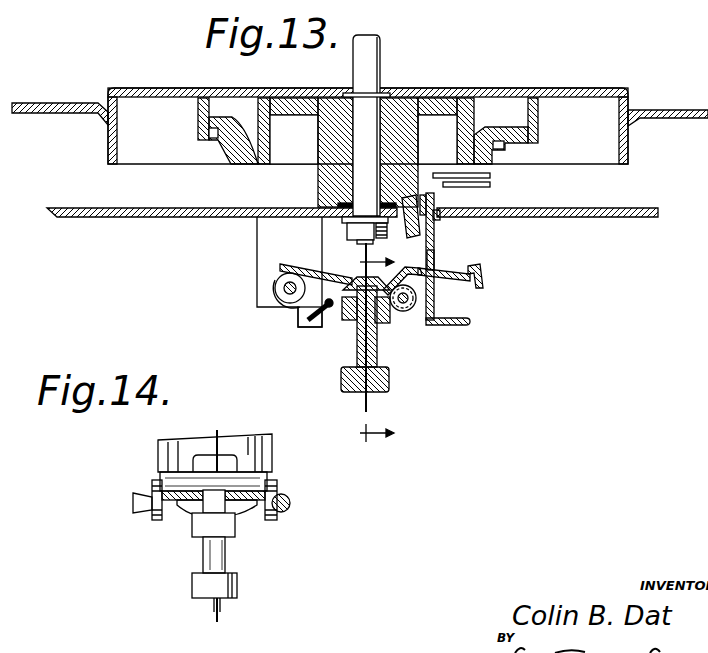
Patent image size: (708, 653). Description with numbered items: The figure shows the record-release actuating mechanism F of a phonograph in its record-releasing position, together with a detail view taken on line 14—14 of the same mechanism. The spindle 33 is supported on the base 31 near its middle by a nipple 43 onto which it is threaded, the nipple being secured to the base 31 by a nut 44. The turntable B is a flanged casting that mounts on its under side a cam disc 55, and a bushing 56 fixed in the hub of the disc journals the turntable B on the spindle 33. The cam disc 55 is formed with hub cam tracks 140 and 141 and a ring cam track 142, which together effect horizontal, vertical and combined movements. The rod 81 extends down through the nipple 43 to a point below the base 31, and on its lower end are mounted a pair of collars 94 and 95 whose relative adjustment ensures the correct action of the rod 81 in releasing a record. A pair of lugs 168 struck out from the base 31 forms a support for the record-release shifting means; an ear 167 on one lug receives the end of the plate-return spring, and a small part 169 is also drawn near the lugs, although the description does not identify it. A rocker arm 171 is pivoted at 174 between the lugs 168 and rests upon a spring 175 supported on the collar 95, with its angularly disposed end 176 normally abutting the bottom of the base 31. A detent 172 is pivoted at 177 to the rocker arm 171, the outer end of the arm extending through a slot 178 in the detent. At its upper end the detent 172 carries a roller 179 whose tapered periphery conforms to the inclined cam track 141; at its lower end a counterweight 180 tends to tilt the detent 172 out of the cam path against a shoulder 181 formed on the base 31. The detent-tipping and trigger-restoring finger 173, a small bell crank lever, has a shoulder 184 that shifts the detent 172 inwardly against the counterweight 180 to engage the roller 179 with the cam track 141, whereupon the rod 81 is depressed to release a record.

In FIG. 13, the turntable B is at (470, 92).
In FIG. 13, the spindle 33 is at (381, 48).
In FIG. 13, the bushing 56 is at (388, 100).
In FIG. 13, the cam disc 55 is at (538, 128).
In FIG. 13, the hub cam track 140 is at (316, 146).
In FIG. 13, the hub cam track 141 is at (291, 166).
In FIG. 13, the ring cam track 142 is at (213, 140).
In FIG. 13, the nipple 43 is at (338, 204).
In FIG. 13, the base 31 is at (138, 218).
In FIG. 13, the nut 44 is at (346, 231).
In FIG. 13, the detent-tipping and trigger-restoring finger 173 is at (495, 176).
In FIG. 13, the shoulder 184 is at (490, 185).
In FIG. 13, the roller 179 is at (427, 197).
In FIG. 13, the shoulder 181 is at (436, 222).
In FIG. 13, the detent 172 is at (434, 243).
In FIG. 14, the detent 172 is at (246, 439).
In FIG. 13, the slot 178 is at (434, 261).
In FIG. 14, the slot 178 is at (200, 458).
In FIG. 13, the counterweight 180 is at (470, 322).
In FIG. 13, the angularly disposed end 176 is at (481, 279).
In FIG. 13, the rocker arm 171 is at (458, 286).
In FIG. 14, the rocker arm 171 is at (178, 482).
In FIG. 13, the tone arm retracting and record-release actuating mechanism F is at (186, 269).
In FIG. 13, the lugs 168 is at (262, 270).
In FIG. 13, the ear 167 is at (300, 329).
In FIG. 13, the pivot 174 is at (279, 299).
In FIG. 14, the pivot 174 is at (289, 502).
In FIG. 13, the pin 169 is at (322, 328).
In FIG. 13, the pivot 177 is at (410, 318).
In FIG. 13, the spring 175 is at (391, 315).
In FIG. 14, the spring 175 is at (180, 512).
In FIG. 13, the collar 95 is at (385, 338).
In FIG. 14, the collar 95 is at (236, 534).
In FIG. 13, the collar 94 is at (341, 378).
In FIG. 14, the collar 94 is at (238, 584).
In FIG. 13, the rod 81 is at (368, 400).
In FIG. 14, the rod 81 is at (220, 613).
In FIG. 13, the section line 14 is at (358, 347).